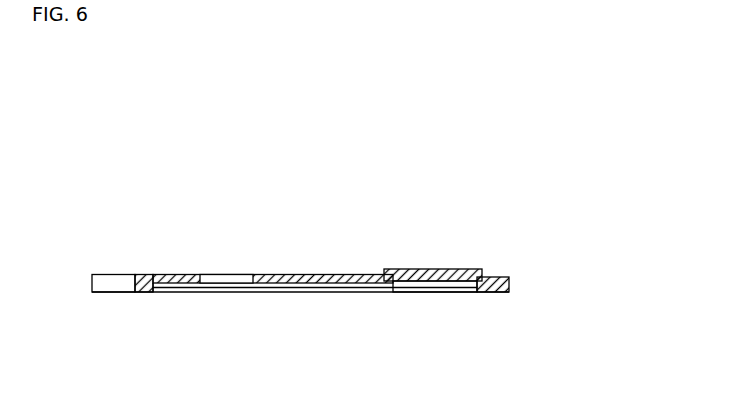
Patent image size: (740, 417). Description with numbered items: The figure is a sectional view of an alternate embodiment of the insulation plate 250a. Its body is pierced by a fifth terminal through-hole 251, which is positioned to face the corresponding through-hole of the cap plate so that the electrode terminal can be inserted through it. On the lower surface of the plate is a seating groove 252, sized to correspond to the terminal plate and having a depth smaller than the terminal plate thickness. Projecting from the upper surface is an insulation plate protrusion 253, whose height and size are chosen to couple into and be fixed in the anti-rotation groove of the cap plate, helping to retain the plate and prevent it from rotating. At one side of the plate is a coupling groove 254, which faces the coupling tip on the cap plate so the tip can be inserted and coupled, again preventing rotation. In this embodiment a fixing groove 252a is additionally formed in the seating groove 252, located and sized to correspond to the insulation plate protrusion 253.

The insulation plate 250a is at (333, 274).
The fifth terminal through-hole 251 is at (232, 278).
The seating groove 252 is at (279, 288).
The fixing groove 252a is at (446, 286).
The insulation plate protrusion 253 is at (411, 270).
The coupling groove 254 is at (117, 278).